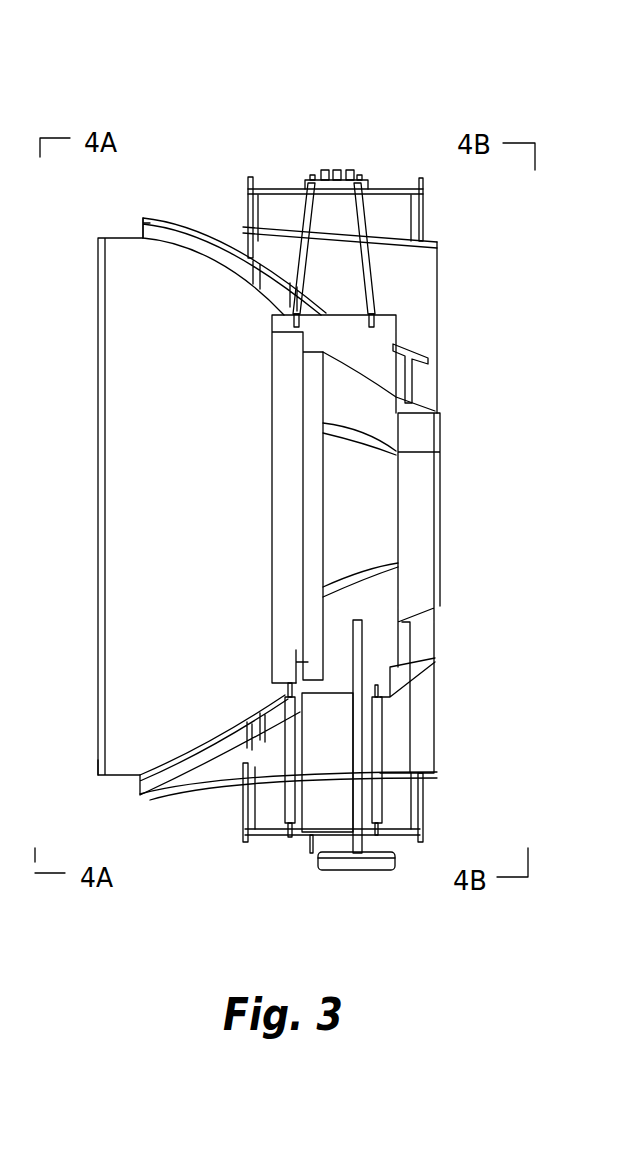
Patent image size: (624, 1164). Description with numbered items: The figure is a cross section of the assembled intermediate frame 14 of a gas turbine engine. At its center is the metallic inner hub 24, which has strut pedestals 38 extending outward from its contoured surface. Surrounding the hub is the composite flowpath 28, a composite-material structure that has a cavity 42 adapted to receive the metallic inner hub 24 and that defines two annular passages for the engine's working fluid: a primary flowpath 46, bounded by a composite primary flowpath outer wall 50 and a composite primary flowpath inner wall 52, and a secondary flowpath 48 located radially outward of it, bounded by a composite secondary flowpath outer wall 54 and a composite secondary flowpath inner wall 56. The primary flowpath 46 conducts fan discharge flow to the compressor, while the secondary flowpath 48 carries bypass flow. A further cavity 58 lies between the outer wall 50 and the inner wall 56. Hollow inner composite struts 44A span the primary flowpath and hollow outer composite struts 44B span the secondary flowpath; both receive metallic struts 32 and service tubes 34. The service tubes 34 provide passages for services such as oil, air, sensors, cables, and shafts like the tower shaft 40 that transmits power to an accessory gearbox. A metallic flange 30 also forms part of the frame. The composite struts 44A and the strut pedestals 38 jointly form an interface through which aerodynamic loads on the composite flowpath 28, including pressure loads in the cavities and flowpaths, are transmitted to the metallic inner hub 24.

The intermediate frame 14 is at (138, 58).
The metallic inner hub 24 is at (399, 552).
The composite flowpath 28 is at (102, 774).
The metallic flange 30 is at (407, 683).
The metallic struts 32 is at (362, 215).
The service tubes 34 is at (319, 800).
The strut pedestals 38 is at (383, 313).
The tower shaft 40 is at (348, 870).
The cavity 42 is at (233, 503).
The inner composite struts 44A is at (233, 280).
The outer composite struts 44B is at (290, 207).
The primary flowpath 46 is at (180, 238).
The secondary flowpath 48 is at (232, 197).
The composite primary flowpath outer wall 50 is at (200, 797).
The composite primary flowpath inner wall 52 is at (222, 732).
The composite secondary flowpath outer wall 54 is at (392, 200).
The composite secondary flowpath inner wall 56 is at (390, 232).
The cavity 58 is at (403, 282).